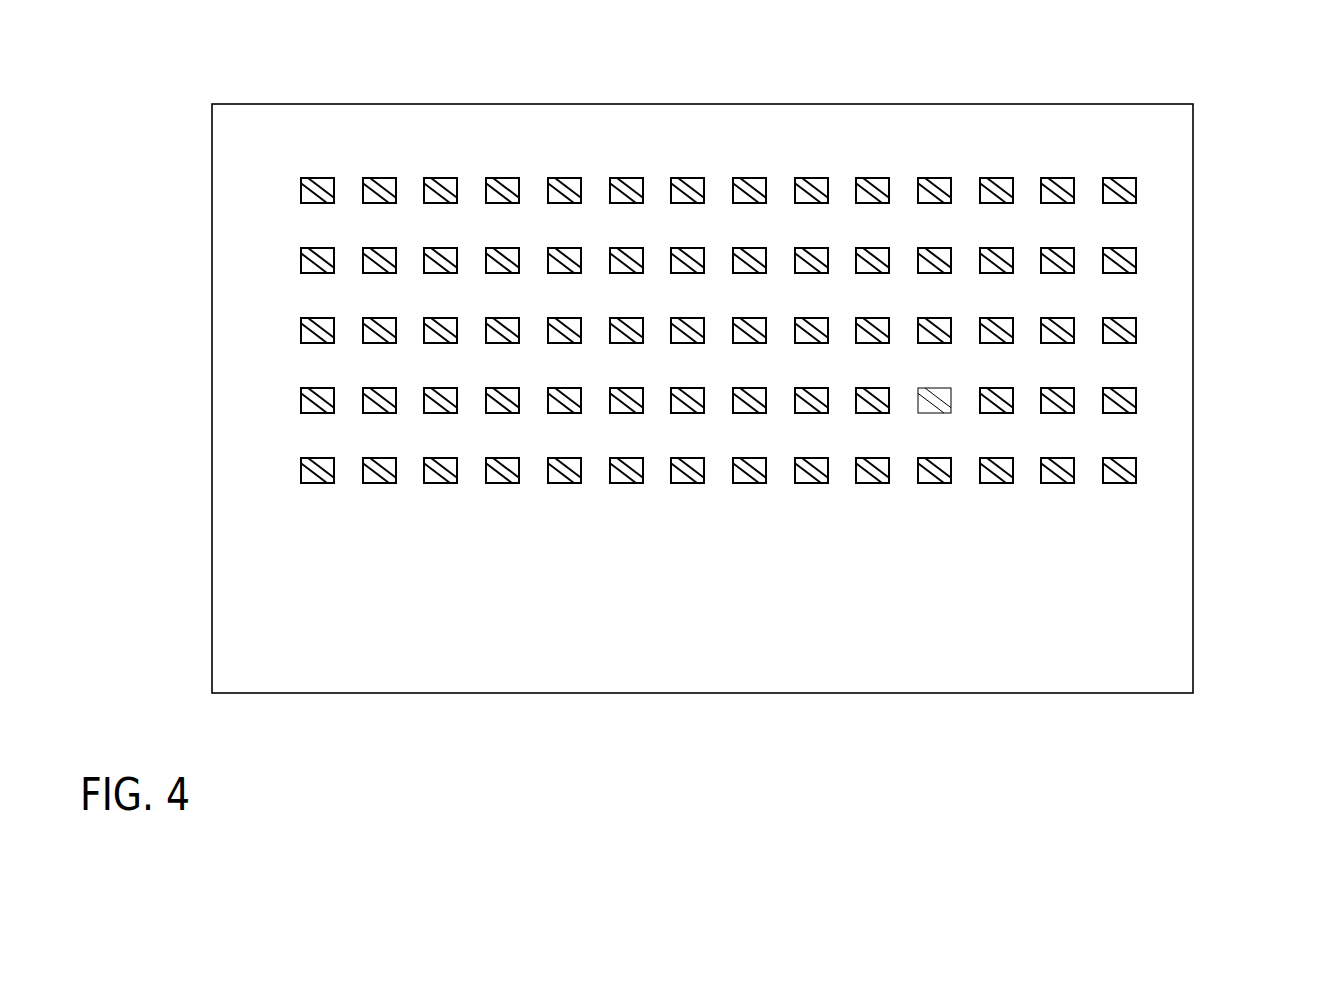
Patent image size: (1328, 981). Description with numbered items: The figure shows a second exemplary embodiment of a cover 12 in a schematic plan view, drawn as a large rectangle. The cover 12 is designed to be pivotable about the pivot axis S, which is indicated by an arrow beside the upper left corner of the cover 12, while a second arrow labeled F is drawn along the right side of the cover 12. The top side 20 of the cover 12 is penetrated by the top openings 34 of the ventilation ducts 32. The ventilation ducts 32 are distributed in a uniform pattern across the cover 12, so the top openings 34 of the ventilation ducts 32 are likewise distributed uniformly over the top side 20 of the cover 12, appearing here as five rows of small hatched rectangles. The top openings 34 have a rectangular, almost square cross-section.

The top side 20 is at (685, 666).
The ventilation ducts 32 is at (745, 190).
The top openings 34 is at (811, 117).
The cover 12 is at (1230, 459).
The pivot axis S is at (192, 103).
The direction F is at (1230, 290).